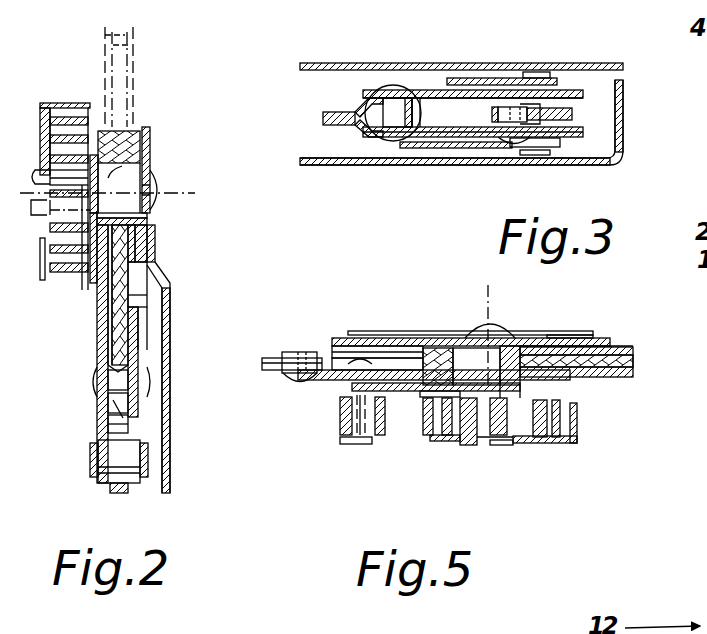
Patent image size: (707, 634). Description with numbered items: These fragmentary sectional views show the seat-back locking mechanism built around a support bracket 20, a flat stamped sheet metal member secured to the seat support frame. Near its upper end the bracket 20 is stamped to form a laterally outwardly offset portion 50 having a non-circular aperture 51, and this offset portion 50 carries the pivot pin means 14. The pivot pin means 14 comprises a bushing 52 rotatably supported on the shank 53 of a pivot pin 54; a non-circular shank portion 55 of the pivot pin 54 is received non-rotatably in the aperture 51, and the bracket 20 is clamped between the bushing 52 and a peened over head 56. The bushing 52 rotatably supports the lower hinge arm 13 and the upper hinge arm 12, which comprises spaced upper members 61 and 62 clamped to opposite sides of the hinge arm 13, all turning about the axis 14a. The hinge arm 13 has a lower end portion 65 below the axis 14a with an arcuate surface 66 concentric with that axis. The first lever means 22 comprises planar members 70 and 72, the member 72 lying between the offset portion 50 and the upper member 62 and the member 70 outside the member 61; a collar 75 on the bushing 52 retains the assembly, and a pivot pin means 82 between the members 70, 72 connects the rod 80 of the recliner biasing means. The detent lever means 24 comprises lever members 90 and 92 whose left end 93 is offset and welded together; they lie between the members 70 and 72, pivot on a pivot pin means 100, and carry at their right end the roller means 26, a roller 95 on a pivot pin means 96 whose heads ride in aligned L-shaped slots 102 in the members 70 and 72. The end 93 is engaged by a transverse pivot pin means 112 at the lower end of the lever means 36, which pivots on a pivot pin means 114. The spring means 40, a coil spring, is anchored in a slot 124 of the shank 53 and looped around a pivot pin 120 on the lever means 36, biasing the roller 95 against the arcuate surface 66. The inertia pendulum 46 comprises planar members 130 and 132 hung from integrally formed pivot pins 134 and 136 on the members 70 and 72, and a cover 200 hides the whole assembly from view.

In FIG. 2, the hinge arm 12 is at (138, 70).
In FIG. 2, the hinge arm 13 is at (168, 292).
In FIG. 3, the hinge arm 13 is at (583, 136).
In FIG. 5, the hinge arm 13 is at (635, 363).
In FIG. 2, the pivot pin means 14 is at (107, 185).
In FIG. 5, the pivot pin means 14 is at (500, 330).
In FIG. 2, the axis 14a is at (162, 198).
In FIG. 5, the axis 14a is at (488, 316).
In FIG. 2, the support bracket 20 is at (170, 390).
In FIG. 3, the support bracket 20 is at (606, 63).
In FIG. 5, the support bracket 20 is at (395, 330).
In FIG. 2, the first lever means 22 is at (94, 443).
In FIG. 3, the first lever means 22 is at (433, 79).
In FIG. 5, the first lever means 22 is at (345, 338).
In FIG. 2, the detent lever means 24 is at (150, 420).
In FIG. 3, the detent lever means 24 is at (345, 108).
In FIG. 5, the detent lever means 24 is at (268, 356).
In FIG. 3, the roller means 26 is at (506, 109).
In FIG. 5, the lever means 36 is at (325, 387).
In FIG. 2, the spring means 40 is at (46, 106).
In FIG. 5, the spring means 40 is at (530, 440).
In FIG. 3, the inertia lock means 46 is at (465, 147).
In FIG. 2, the offset portion 50 is at (150, 128).
In FIG. 5, the offset portion 50 is at (520, 342).
In FIG. 2, the aperture 51 is at (152, 185).
In FIG. 5, the aperture 51 is at (476, 366).
In FIG. 2, the bushing 52 is at (142, 152).
In FIG. 5, the bushing 52 is at (510, 334).
In FIG. 2, the shank 53 is at (45, 178).
In FIG. 5, the shank 53 is at (460, 400).
In FIG. 2, the pivot pin 54 is at (160, 195).
In FIG. 5, the pivot pin 54 is at (555, 336).
In FIG. 2, the non-circular shank portion 55 is at (148, 226).
In FIG. 5, the non-circular shank portion 55 is at (478, 325).
In FIG. 2, the peened over head 56 is at (150, 216).
In FIG. 5, the peened over head 56 is at (470, 330).
In FIG. 2, the upper member 61 is at (105, 34).
In FIG. 5, the upper member 61 is at (600, 380).
In FIG. 2, the upper member 62 is at (128, 47).
In FIG. 5, the upper member 62 is at (622, 350).
In FIG. 2, the lower end portion 65 is at (120, 330).
In FIG. 3, the lower end portion 65 is at (572, 117).
In FIG. 2, the lower arcuate surface 66 is at (132, 368).
In FIG. 2, the planar member 70 is at (108, 404).
In FIG. 3, the planar member 70 is at (540, 148).
In FIG. 5, the planar member 70 is at (570, 383).
In FIG. 2, the planar member 72 is at (130, 414).
In FIG. 3, the planar member 72 is at (583, 96).
In FIG. 5, the planar member 72 is at (560, 344).
In FIG. 2, the collar 75 is at (92, 240).
In FIG. 5, the collar 75 is at (448, 392).
In FIG. 2, the rod 80 is at (112, 425).
In FIG. 2, the pivot pin means 82 is at (120, 495).
In FIG. 2, the lever member 90 is at (100, 335).
In FIG. 3, the lever member 90 is at (405, 98).
In FIG. 2, the lever member 92 is at (140, 345).
In FIG. 3, the lever member 92 is at (412, 137).
In FIG. 3, the left end 93 is at (338, 112).
In FIG. 5, the left end 93 is at (284, 372).
In FIG. 3, the roller 95 is at (475, 140).
In FIG. 3, the pivot pin means 96 is at (612, 82).
In FIG. 2, the pivot pin means 100 is at (92, 379).
In FIG. 3, the pivot pin means 100 is at (360, 108).
In FIG. 3, the slots 102 is at (494, 107).
In FIG. 5, the pivot pin means 112 is at (300, 352).
In FIG. 5, the pivot pin means 114 is at (395, 395).
In FIG. 5, the pivot pin 120 is at (360, 444).
In FIG. 2, the slot 124 is at (45, 212).
In FIG. 5, the slot 124 is at (505, 400).
In FIG. 3, the planar member 130 is at (520, 153).
In FIG. 3, the planar member 132 is at (530, 72).
In FIG. 3, the pivot pin 134 is at (540, 150).
In FIG. 3, the pivot pin 136 is at (528, 114).
In FIG. 2, the cover 200 is at (41, 256).
In FIG. 3, the cover 200 is at (340, 158).
In FIG. 5, the cover 200 is at (565, 445).